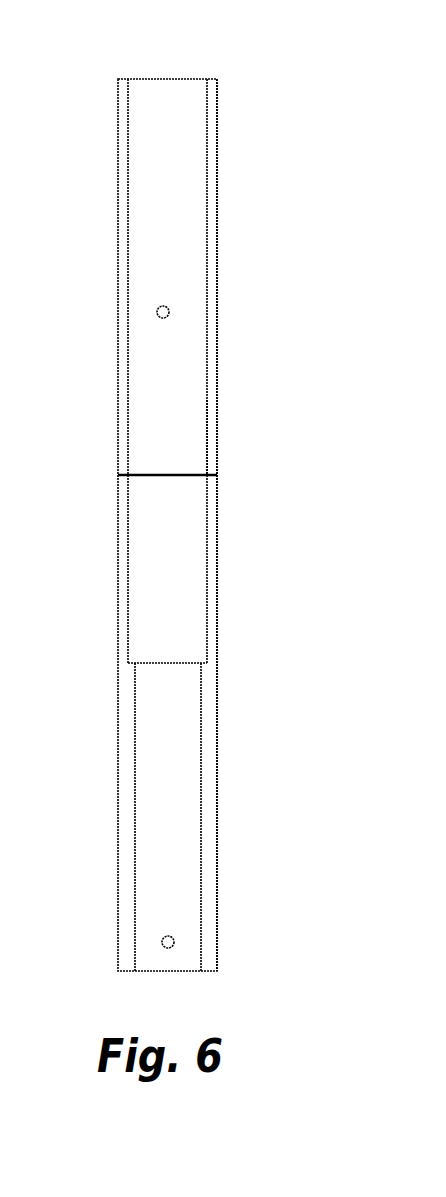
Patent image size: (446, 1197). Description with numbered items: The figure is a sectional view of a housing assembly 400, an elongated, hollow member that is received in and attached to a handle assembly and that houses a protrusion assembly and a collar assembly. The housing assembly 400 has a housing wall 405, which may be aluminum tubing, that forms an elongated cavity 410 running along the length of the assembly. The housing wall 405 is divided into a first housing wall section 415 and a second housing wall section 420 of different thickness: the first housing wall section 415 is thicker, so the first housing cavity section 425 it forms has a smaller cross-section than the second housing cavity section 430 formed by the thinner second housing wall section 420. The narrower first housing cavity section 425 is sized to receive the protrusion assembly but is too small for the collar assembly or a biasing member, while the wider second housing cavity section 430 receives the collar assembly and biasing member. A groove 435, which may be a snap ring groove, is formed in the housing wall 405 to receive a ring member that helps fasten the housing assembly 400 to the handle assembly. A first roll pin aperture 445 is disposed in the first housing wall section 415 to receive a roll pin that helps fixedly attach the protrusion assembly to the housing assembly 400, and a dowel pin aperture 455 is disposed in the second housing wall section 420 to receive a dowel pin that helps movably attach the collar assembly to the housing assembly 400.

The housing assembly 400 is at (99, 284).
The housing wall 405 is at (213, 263).
The elongated cavity 410 is at (168, 110).
The first housing wall section 415 is at (208, 797).
The second housing wall section 420 is at (213, 423).
The first housing cavity section 425 is at (156, 802).
The second housing cavity section 430 is at (148, 435).
The groove 435 is at (216, 477).
The first roll pin aperture 445 is at (172, 940).
The dowel pin aperture 455 is at (169, 312).